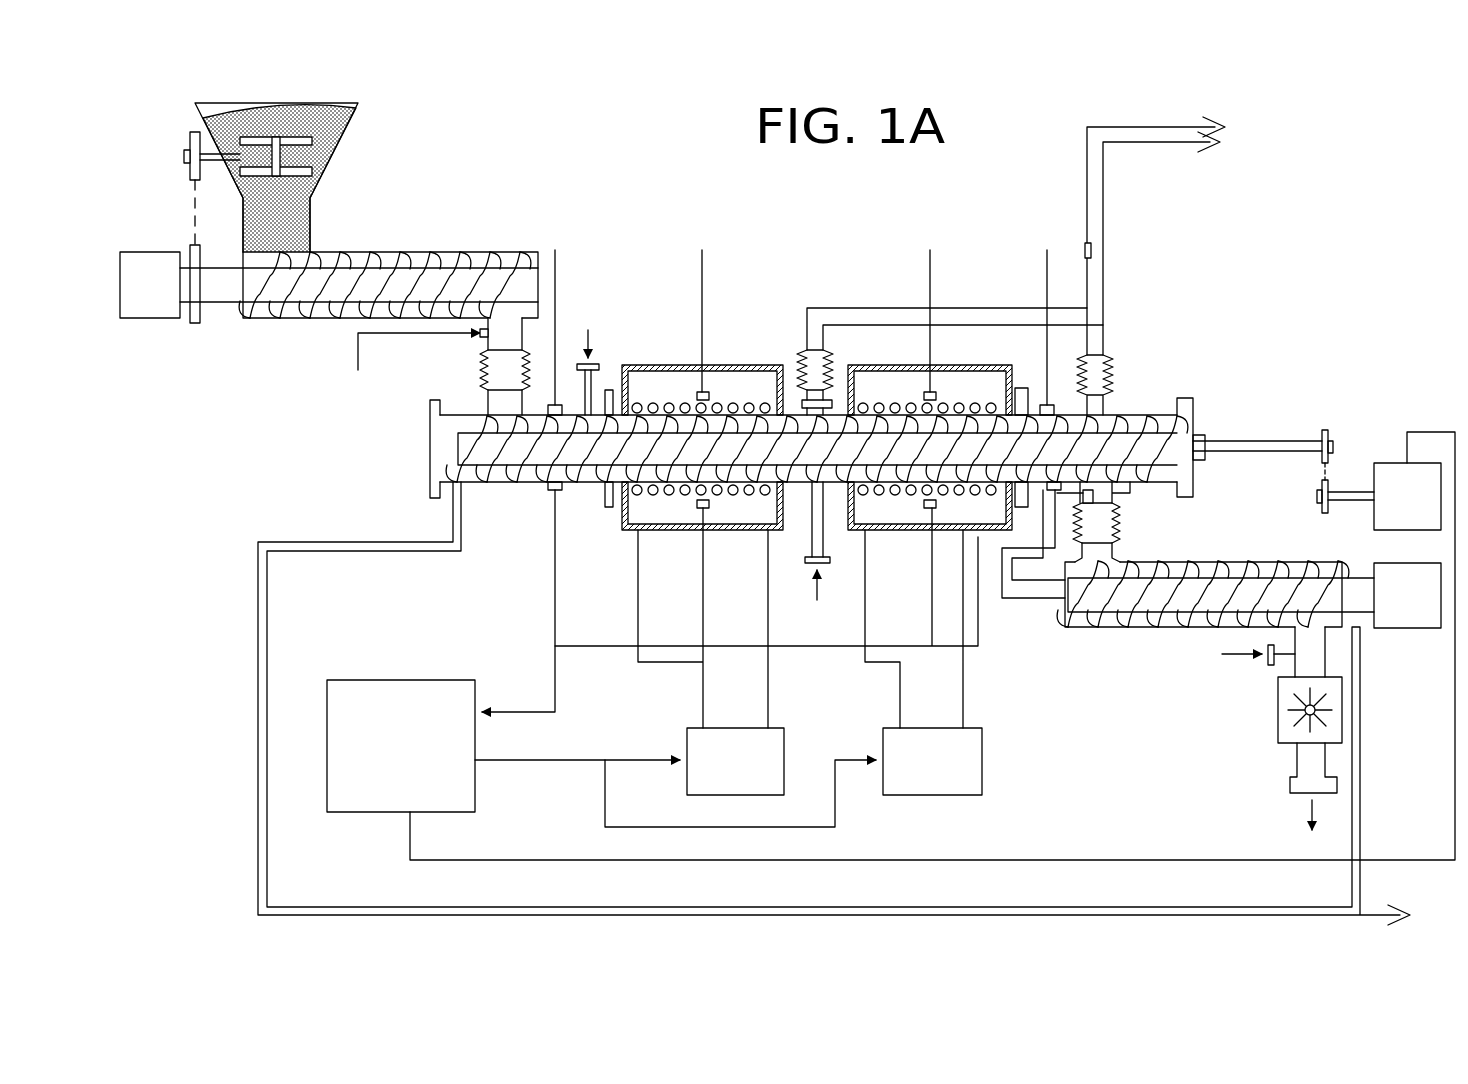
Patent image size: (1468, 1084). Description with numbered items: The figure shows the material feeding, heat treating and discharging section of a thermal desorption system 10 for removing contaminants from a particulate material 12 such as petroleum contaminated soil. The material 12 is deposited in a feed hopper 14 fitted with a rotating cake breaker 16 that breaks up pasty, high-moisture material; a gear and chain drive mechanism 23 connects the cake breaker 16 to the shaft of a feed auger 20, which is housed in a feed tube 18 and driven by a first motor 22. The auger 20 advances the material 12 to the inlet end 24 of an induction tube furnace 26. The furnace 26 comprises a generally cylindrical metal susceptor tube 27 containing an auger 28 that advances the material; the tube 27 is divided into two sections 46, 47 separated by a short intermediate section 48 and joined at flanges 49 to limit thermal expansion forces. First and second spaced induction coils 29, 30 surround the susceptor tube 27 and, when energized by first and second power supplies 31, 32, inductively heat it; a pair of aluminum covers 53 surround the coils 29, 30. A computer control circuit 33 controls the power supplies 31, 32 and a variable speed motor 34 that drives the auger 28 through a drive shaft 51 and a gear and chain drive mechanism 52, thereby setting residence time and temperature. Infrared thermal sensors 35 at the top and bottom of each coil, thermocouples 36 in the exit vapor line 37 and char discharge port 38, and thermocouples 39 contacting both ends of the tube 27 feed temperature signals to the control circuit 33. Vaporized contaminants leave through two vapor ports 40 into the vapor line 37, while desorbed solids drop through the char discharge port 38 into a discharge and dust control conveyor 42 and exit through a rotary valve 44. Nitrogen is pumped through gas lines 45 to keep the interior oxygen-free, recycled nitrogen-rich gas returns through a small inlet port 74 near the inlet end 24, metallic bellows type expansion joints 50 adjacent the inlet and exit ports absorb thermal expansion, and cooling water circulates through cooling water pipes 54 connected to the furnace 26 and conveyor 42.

The thermal desorption system 10 is at (550, 149).
The particulate material 12 is at (285, 218).
The feed hopper 14 is at (352, 117).
The rotating cake breaker 16 is at (247, 127).
The feed tube 18 is at (400, 253).
The feed auger 20 is at (480, 282).
The first motor 22 is at (147, 313).
The gear and chain drive mechanism 23 is at (188, 198).
The inlet end 24 is at (487, 400).
The induction tube furnace 26 is at (752, 355).
The susceptor tube 27 is at (524, 484).
The auger 28 is at (468, 452).
The first induction coil 29 is at (653, 400).
The second induction coil 30 is at (975, 472).
The first power supply 31 is at (693, 728).
The second power supply 32 is at (983, 748).
The computer control circuit 33 is at (400, 680).
The variable speed motor 34 is at (1385, 463).
The infrared thermal sensors 35 is at (705, 390).
The thermocouples 36 is at (1093, 247).
The exit vapor line 37 is at (902, 308).
The char discharge port 38 is at (1130, 493).
The thermocouples 39 is at (557, 403).
The vapor ports 40 is at (815, 388).
The discharge and dust control conveyor 42 is at (1203, 562).
The rotary valve 44 is at (1278, 703).
The gas lines 45 is at (358, 343).
The first susceptor tube section 46 is at (668, 530).
The second susceptor tube section 47 is at (895, 525).
The intermediate section 48 is at (808, 512).
The flanges 49 is at (613, 388).
The bellows type expansion joints 50 is at (485, 365).
The drive shaft 51 is at (1257, 440).
The gear and chain drive mechanism 52 is at (1337, 470).
The aluminum covers 53 is at (630, 528).
The cooling water pipes 54 is at (325, 542).
The inlet port 74 is at (593, 363).